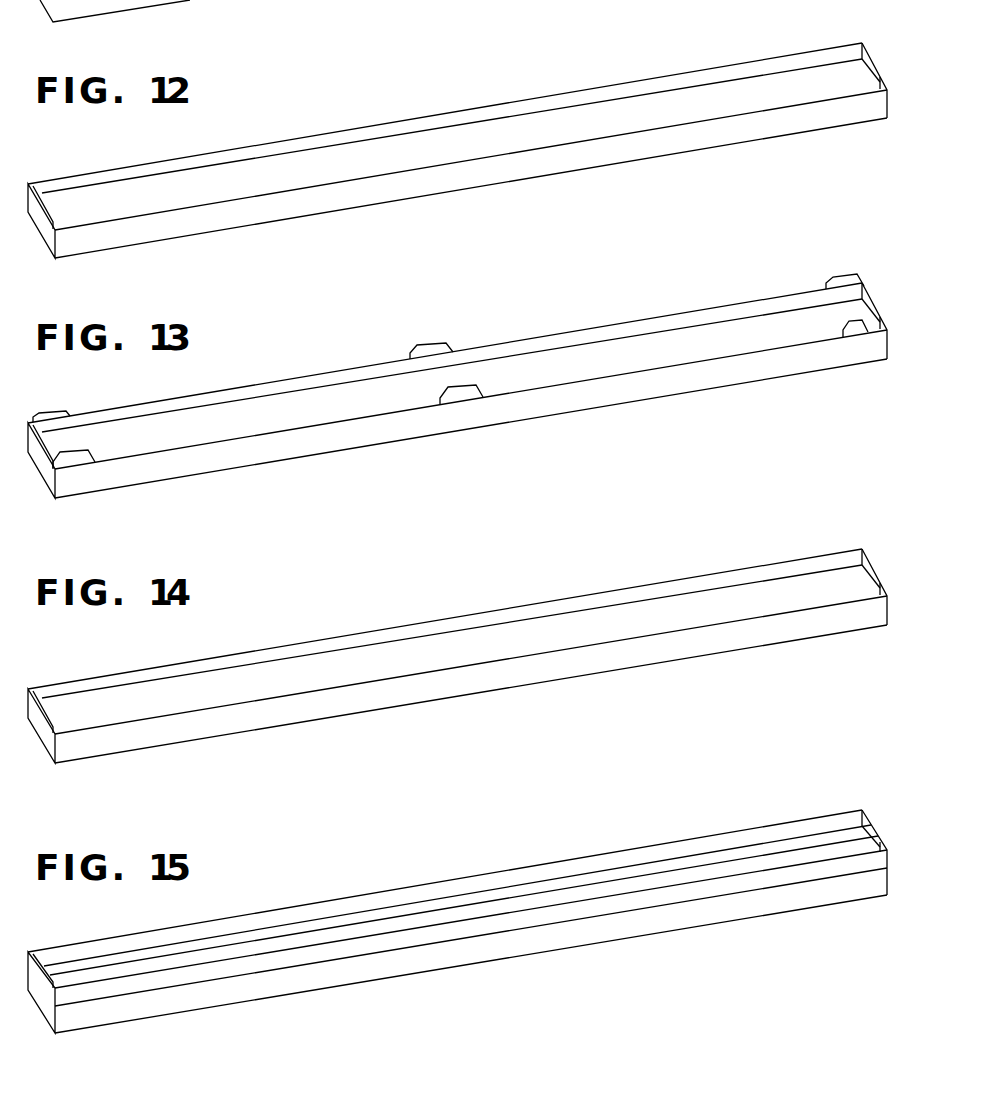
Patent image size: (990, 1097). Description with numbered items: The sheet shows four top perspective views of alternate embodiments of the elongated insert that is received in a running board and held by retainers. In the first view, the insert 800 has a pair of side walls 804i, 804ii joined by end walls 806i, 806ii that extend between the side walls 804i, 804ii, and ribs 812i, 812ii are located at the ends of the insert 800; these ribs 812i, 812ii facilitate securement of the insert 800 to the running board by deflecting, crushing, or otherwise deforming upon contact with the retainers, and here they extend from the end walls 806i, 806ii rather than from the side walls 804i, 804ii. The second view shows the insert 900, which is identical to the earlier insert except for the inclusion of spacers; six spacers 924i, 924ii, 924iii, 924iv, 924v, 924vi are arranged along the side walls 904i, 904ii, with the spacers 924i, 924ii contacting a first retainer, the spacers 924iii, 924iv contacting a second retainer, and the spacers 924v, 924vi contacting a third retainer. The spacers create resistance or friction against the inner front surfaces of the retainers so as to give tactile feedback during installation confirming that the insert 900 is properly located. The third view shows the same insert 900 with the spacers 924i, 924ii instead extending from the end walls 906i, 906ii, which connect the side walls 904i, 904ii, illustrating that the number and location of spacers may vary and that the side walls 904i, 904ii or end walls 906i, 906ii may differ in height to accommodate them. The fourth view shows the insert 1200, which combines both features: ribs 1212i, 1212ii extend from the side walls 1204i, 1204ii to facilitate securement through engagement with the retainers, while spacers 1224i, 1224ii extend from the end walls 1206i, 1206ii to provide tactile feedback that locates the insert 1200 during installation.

In FIG. 12, the insert 800 is at (645, 50).
In FIG. 12, the side wall 804i is at (318, 0).
In FIG. 12, the side wall 804ii is at (471, 131).
In FIG. 12, the end wall 806i is at (43, 222).
In FIG. 12, the end wall 806ii is at (887, 88).
In FIG. 12, the rib 812i is at (40, 184).
In FIG. 12, the rib 812ii is at (866, 45).
In FIG. 13, the insert 900 is at (718, 290).
In FIG. 14, the insert 900 is at (718, 555).
In FIG. 13, the side wall 904i is at (272, 388).
In FIG. 14, the side wall 904i is at (315, 650).
In FIG. 13, the side wall 904ii is at (350, 432).
In FIG. 14, the side wall 904ii is at (380, 692).
In FIG. 13, the end wall 906i is at (43, 462).
In FIG. 14, the end wall 906i is at (42, 728).
In FIG. 13, the end wall 906ii is at (873, 306).
In FIG. 14, the end wall 906ii is at (885, 594).
In FIG. 13, the spacer 924i is at (50, 413).
In FIG. 14, the spacer 924i is at (40, 690).
In FIG. 13, the spacer 924ii is at (88, 456).
In FIG. 14, the spacer 924ii is at (865, 560).
In FIG. 13, the spacer 924iii is at (430, 345).
In FIG. 13, the spacer 924iv is at (470, 385).
In FIG. 13, the spacer 924v is at (842, 282).
In FIG. 13, the spacer 924vi is at (850, 325).
In FIG. 15, the insert 1200 is at (720, 835).
In FIG. 15, the side wall 1204i is at (333, 920).
In FIG. 15, the side wall 1204ii is at (450, 962).
In FIG. 15, the end wall 1206i is at (45, 992).
In FIG. 15, the end wall 1206ii is at (887, 880).
In FIG. 15, the rib 1212i is at (428, 888).
In FIG. 15, the rib 1212ii is at (275, 962).
In FIG. 15, the spacer 1224i is at (40, 955).
In FIG. 15, the spacer 1224ii is at (866, 834).